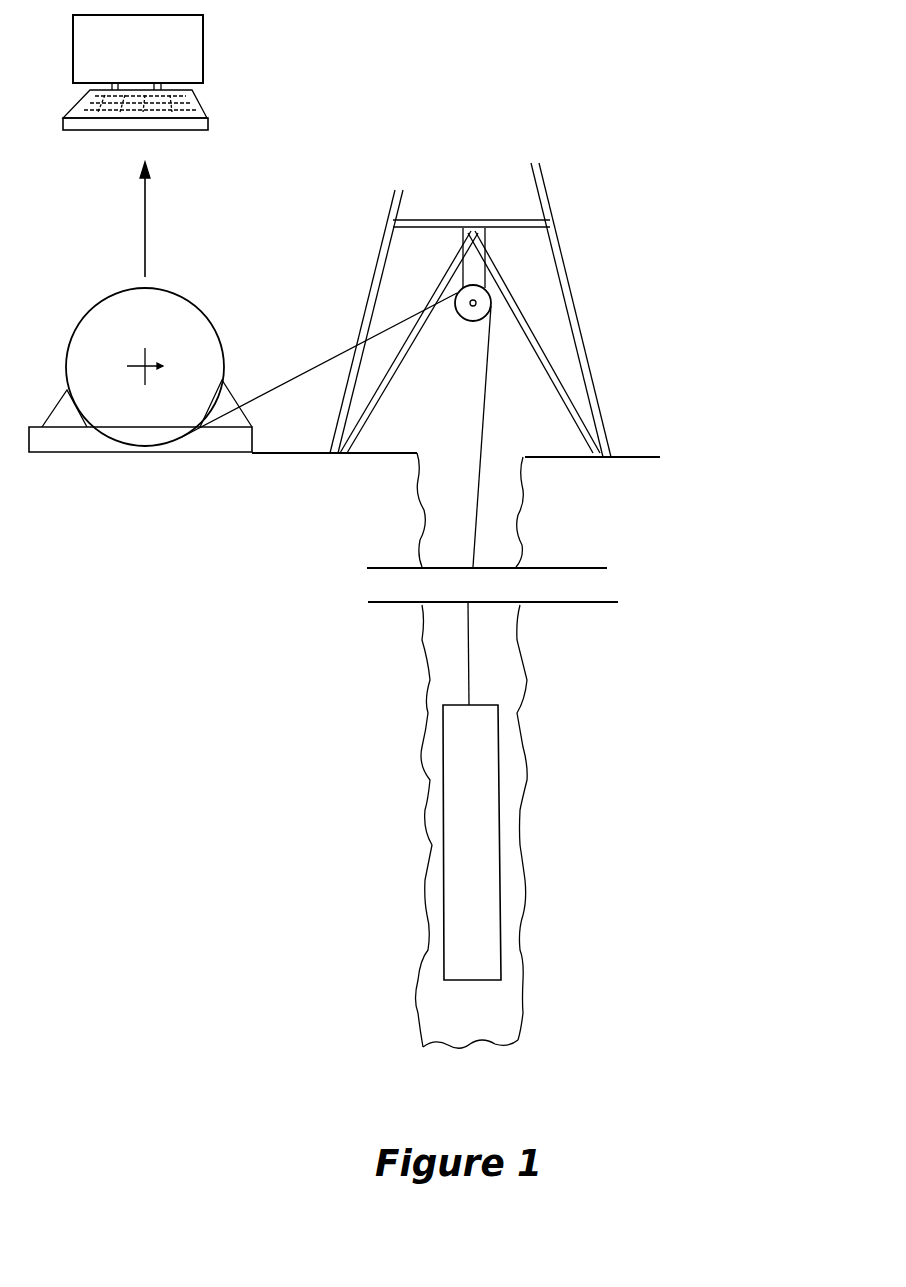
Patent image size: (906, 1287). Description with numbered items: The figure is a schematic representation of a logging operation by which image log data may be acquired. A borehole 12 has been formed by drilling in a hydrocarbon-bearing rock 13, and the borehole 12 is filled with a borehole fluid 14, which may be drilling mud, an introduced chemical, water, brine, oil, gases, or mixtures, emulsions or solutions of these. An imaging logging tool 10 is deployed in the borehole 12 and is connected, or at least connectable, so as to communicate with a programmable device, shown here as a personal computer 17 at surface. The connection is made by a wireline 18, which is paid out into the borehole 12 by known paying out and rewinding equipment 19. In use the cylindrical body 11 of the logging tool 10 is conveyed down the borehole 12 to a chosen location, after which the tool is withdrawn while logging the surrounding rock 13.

The imaging logging tool 10 is at (478, 823).
The cylindrical body 11 is at (442, 747).
The borehole 12 is at (423, 487).
The hydrocarbon-bearing rock 13 is at (296, 819).
The borehole fluid 14 is at (433, 640).
The personal computer 17 is at (203, 60).
The wireline 18 is at (145, 232).
The paying out and rewinding equipment 19 is at (197, 343).